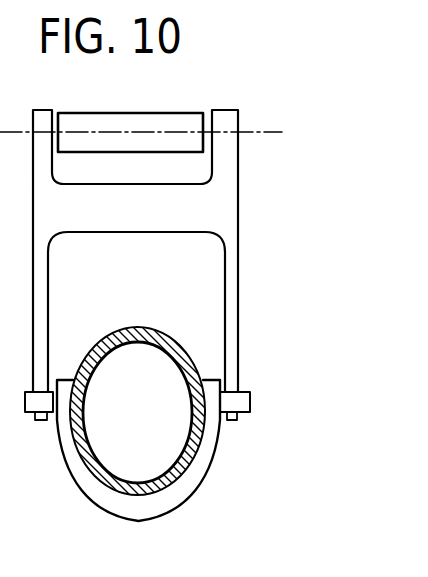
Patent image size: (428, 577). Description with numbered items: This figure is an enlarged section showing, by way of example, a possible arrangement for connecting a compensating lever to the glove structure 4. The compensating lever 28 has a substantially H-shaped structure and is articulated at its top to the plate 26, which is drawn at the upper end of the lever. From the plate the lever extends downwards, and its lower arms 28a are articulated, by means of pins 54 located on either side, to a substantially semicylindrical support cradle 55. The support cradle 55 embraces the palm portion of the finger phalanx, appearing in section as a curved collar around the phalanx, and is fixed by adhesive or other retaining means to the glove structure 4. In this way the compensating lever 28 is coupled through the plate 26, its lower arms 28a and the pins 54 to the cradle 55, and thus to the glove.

The plate 26 is at (123, 127).
The compensating lever 28 is at (212, 212).
The lower arms 28a is at (228, 341).
The pins 54 is at (33, 399).
The support cradle 55 is at (142, 507).
The glove structure 4 is at (180, 482).